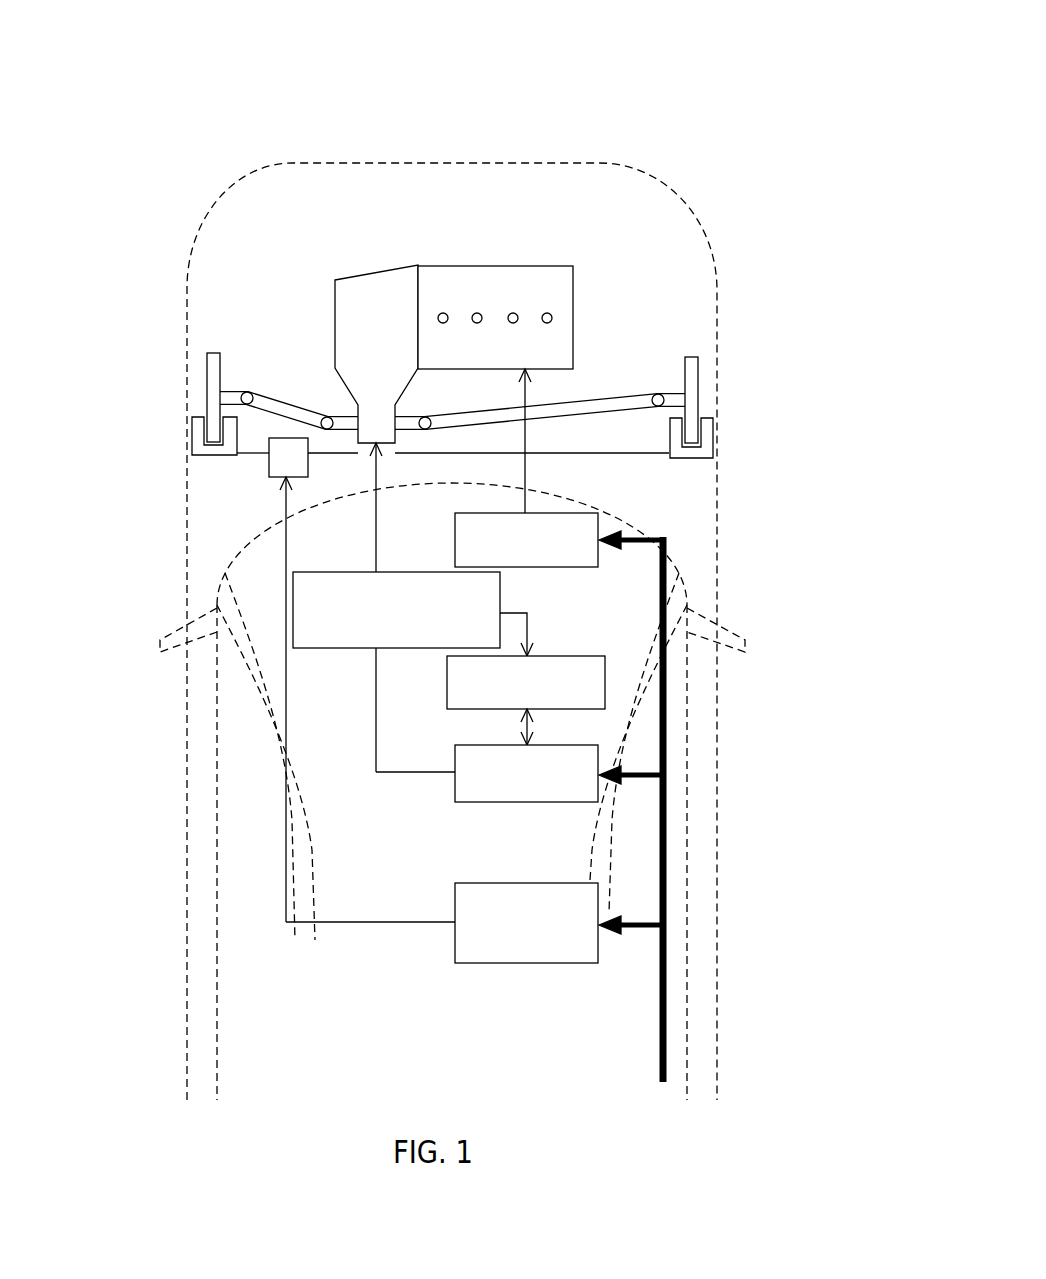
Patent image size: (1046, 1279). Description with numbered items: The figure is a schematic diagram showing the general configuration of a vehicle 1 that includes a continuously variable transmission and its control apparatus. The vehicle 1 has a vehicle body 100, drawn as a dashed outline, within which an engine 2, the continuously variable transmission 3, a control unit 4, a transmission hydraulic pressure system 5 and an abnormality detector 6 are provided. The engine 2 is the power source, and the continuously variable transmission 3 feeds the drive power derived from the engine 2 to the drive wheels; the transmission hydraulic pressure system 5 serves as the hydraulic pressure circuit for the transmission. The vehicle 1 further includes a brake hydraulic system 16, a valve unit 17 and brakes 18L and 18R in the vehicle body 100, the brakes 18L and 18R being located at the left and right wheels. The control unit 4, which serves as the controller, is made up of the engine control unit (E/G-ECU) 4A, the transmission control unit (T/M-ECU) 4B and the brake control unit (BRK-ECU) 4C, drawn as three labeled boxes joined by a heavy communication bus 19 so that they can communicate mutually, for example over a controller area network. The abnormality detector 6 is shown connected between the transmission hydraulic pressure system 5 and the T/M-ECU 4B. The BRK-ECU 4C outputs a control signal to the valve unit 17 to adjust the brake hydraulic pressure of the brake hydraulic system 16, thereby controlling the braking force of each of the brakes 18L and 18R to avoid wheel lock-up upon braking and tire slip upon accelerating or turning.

The vehicle 1 is at (698, 113).
The vehicle body 100 is at (258, 166).
The engine 2 is at (482, 290).
The continuously variable transmission 3 is at (380, 290).
The control unit 4 is at (472, 763).
The engine control unit (E/G-ECU) 4A is at (567, 511).
The transmission control unit (T/M-ECU) 4B is at (487, 803).
The brake control unit (BRK-ECU) 4C is at (567, 882).
The transmission hydraulic pressure system 5 is at (330, 648).
The abnormality detector 6 is at (553, 656).
The brake hydraulic system 16 is at (255, 458).
The valve unit 17 is at (292, 450).
The brake 18L is at (198, 382).
The brake 18R is at (707, 397).
The communication bus 19 is at (683, 1013).